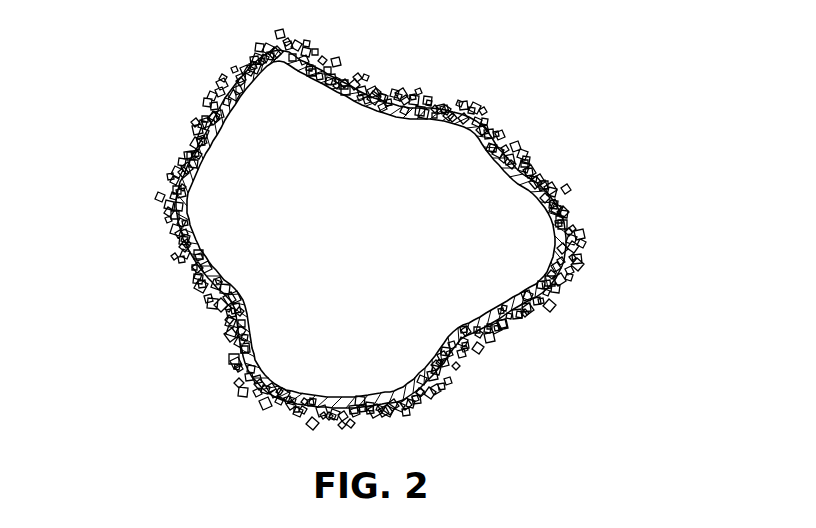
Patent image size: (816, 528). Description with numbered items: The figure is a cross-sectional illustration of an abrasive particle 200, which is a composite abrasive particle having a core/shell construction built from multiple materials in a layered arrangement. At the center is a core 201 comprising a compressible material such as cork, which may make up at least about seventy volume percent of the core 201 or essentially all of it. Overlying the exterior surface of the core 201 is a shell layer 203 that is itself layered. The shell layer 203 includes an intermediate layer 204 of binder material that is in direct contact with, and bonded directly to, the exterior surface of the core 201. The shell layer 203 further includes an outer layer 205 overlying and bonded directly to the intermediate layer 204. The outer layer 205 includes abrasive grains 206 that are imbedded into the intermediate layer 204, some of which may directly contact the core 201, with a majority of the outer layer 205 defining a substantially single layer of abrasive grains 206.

The abrasive particle 200 is at (375, 229).
The core 201 is at (371, 229).
The shell layer 203 is at (560, 155).
The intermediate layer 204 is at (170, 225).
The outer layer 205 is at (415, 93).
The abrasive grains 206 is at (578, 243).